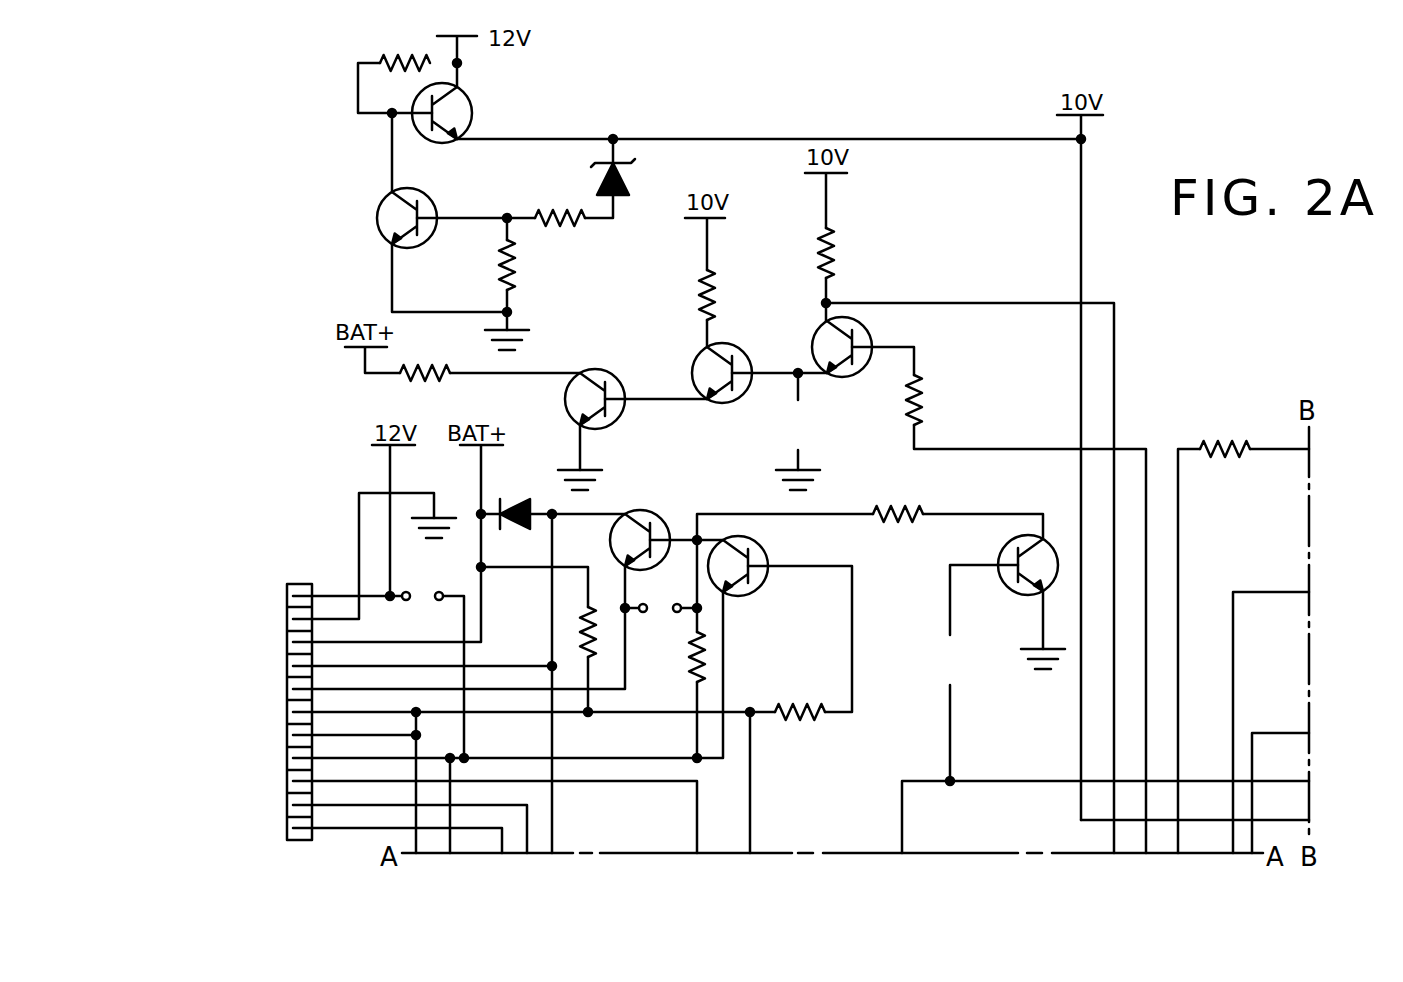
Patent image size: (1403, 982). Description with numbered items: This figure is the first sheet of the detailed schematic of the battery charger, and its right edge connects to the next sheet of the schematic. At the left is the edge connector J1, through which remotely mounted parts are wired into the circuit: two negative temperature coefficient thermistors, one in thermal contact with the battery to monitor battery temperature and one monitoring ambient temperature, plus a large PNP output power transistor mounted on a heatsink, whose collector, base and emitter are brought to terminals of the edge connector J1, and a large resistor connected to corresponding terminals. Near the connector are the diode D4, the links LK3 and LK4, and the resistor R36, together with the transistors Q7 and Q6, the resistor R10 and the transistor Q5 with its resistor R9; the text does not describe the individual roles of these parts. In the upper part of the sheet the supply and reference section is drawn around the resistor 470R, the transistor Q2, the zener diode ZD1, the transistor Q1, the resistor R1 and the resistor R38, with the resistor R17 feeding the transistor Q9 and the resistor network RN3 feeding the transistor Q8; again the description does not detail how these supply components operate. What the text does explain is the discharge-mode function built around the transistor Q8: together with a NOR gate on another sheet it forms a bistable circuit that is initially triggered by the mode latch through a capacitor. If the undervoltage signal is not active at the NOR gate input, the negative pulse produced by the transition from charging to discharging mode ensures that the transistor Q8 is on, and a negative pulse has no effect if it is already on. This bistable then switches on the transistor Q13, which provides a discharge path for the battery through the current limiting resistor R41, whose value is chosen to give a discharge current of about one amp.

The 470 ohm resistor 470R is at (400, 56).
The transistor Q2 is at (470, 110).
The zener diode ZD1 is at (598, 180).
The transistor Q1 is at (378, 222).
The resistor R38 is at (567, 228).
The resistor R1 is at (500, 270).
The current limiting resistor R41 is at (428, 383).
The transistor Q13 is at (592, 370).
The resistor R17 is at (716, 295).
The transistor Q9 is at (720, 404).
The resistor network RN3 is at (836, 244).
The transistor Q8 is at (870, 338).
The resistor R9 is at (901, 506).
The transistor Q7 is at (652, 512).
The transistor Q6 is at (764, 550).
The transistor Q5 is at (1010, 592).
The resistor R36 is at (586, 605).
The resistor R10 is at (790, 700).
The link LK3 is at (664, 612).
The link LK4 is at (422, 601).
The diode D4 is at (511, 497).
The edge connector J1 is at (250, 685).